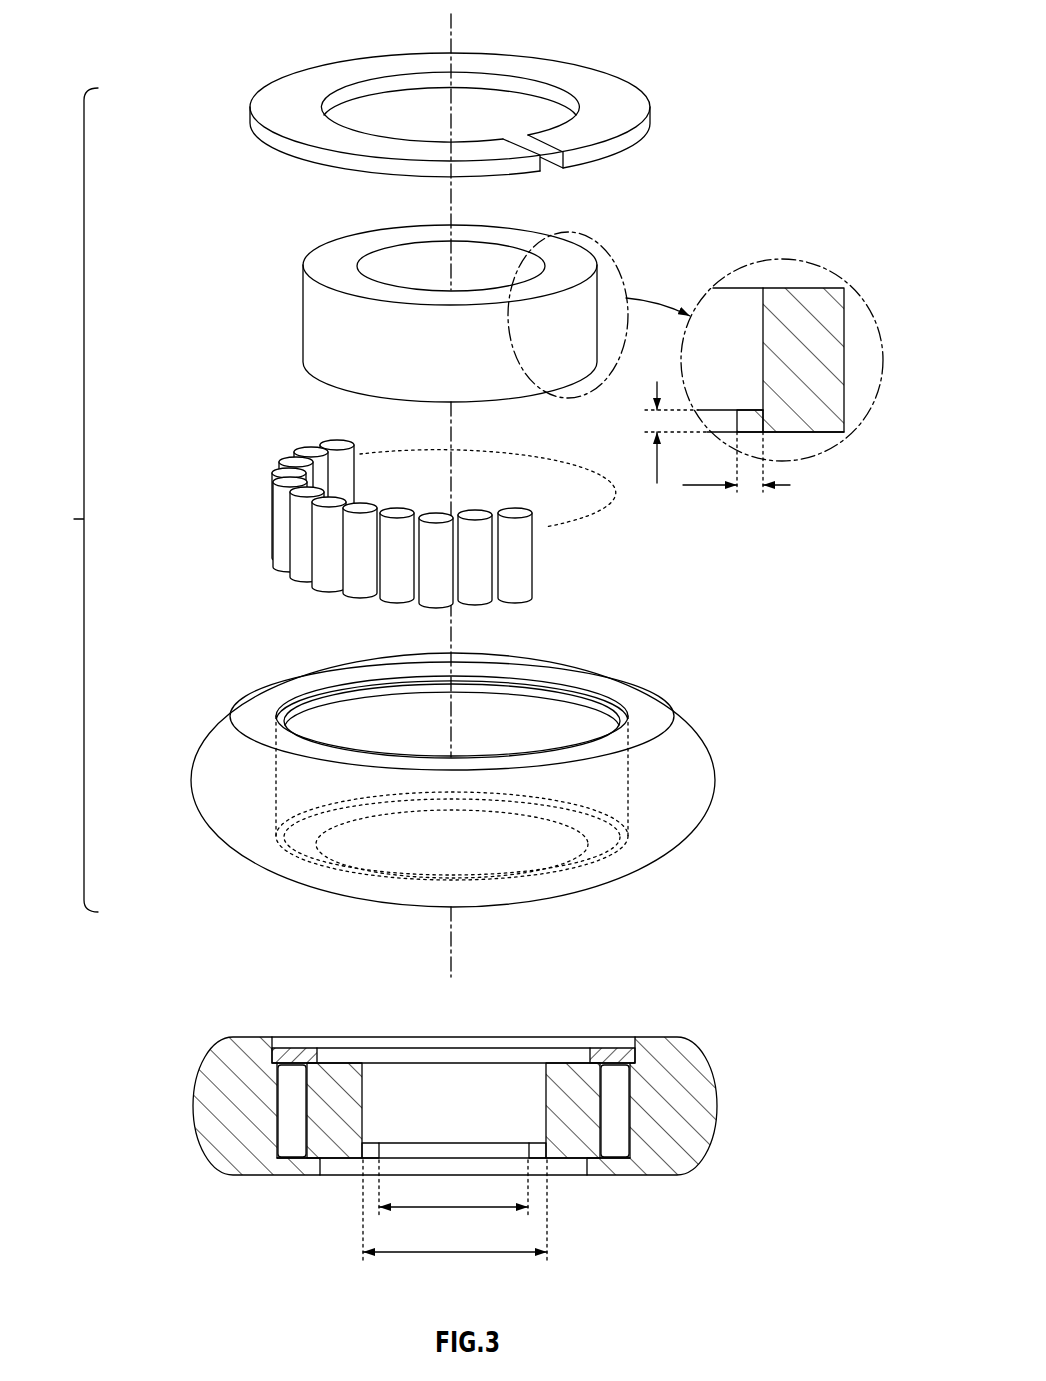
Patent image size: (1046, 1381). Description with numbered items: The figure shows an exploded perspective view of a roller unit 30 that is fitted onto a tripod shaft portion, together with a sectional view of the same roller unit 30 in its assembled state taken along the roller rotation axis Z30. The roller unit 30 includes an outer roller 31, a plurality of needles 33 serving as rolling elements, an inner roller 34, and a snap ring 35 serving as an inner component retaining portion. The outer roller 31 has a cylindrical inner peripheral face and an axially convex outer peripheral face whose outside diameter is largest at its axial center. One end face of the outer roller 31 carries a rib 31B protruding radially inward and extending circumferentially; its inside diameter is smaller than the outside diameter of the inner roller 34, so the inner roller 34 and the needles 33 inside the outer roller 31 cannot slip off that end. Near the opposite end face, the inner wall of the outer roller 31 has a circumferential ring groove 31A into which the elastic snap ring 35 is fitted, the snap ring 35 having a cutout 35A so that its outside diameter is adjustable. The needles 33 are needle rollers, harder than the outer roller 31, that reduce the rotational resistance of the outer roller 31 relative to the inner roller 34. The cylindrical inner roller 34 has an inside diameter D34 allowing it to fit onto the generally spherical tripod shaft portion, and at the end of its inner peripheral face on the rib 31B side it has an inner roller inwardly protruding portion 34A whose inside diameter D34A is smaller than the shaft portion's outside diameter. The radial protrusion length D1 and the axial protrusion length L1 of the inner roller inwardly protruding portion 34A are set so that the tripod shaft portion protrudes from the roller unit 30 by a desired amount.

The roller unit 30 is at (752, 998).
The outer roller 31 is at (418, 923).
The ring groove 31A is at (322, 703).
The rib 31B is at (377, 828).
The needles 33 is at (267, 456).
The inner roller 34 is at (296, 277).
The inner roller inwardly protruding portion 34A is at (752, 406).
The snap ring 35 is at (411, 558).
The cutout 35A is at (551, 168).
The roller rotation axis Z30 is at (458, 31).
The axial protrusion length L1 is at (666, 432).
The radial protrusion length D1 is at (736, 462).
The inside diameter D34 is at (455, 1210).
The inside diameter D34A is at (453, 1187).